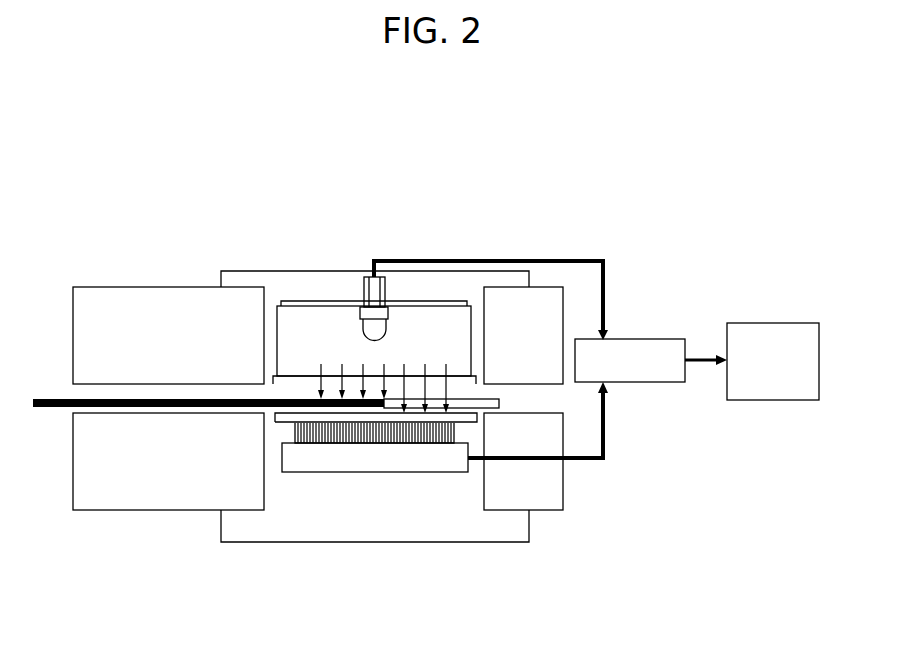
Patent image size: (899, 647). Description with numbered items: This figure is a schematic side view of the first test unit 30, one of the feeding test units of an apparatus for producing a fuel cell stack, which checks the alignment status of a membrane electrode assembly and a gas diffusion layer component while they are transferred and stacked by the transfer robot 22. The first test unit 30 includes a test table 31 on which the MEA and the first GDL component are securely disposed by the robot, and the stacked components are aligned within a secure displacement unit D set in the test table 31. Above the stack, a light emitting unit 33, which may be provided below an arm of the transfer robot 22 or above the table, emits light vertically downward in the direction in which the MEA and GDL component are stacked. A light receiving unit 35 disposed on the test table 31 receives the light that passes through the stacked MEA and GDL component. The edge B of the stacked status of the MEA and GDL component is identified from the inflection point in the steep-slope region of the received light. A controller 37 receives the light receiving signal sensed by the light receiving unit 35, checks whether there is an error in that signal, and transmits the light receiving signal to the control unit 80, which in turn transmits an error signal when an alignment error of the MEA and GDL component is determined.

The first test unit 30 is at (481, 170).
The transfer robot 22 is at (114, 293).
The light emitting unit 33 is at (363, 328).
The light receiving unit 35 is at (354, 444).
The edge B is at (383, 408).
The secure displacement unit D is at (277, 418).
The test table 31 is at (462, 498).
The controller 37 is at (658, 383).
The control unit 80 is at (795, 401).